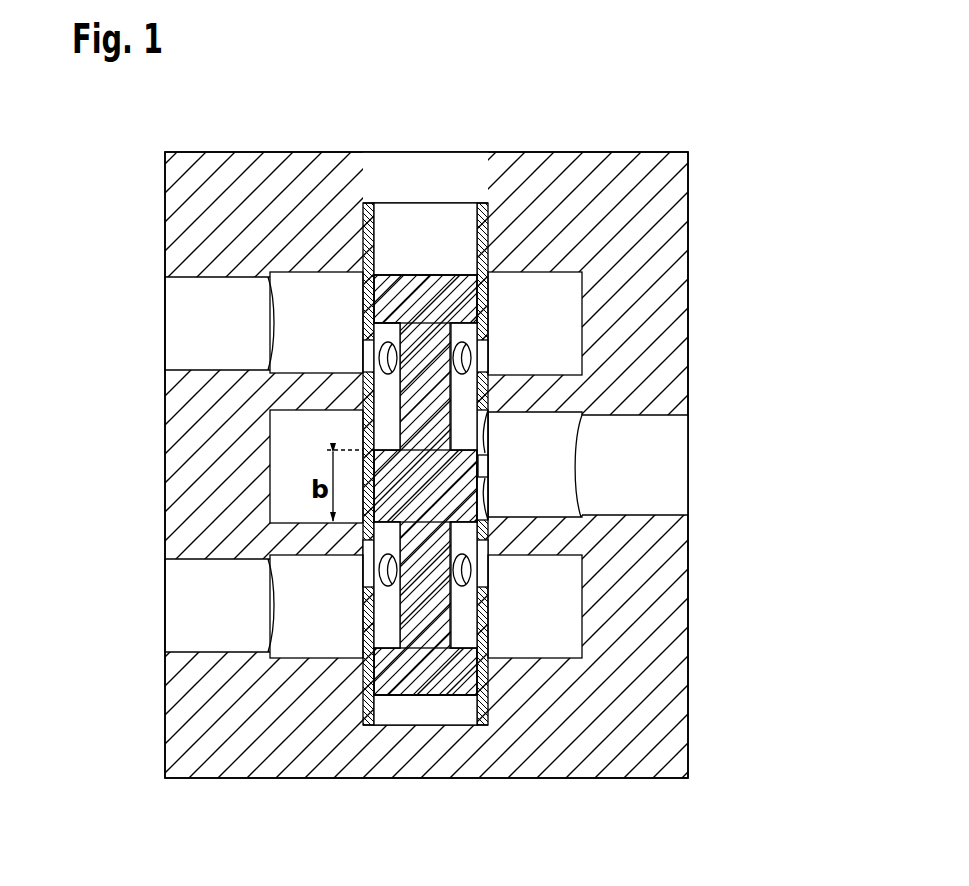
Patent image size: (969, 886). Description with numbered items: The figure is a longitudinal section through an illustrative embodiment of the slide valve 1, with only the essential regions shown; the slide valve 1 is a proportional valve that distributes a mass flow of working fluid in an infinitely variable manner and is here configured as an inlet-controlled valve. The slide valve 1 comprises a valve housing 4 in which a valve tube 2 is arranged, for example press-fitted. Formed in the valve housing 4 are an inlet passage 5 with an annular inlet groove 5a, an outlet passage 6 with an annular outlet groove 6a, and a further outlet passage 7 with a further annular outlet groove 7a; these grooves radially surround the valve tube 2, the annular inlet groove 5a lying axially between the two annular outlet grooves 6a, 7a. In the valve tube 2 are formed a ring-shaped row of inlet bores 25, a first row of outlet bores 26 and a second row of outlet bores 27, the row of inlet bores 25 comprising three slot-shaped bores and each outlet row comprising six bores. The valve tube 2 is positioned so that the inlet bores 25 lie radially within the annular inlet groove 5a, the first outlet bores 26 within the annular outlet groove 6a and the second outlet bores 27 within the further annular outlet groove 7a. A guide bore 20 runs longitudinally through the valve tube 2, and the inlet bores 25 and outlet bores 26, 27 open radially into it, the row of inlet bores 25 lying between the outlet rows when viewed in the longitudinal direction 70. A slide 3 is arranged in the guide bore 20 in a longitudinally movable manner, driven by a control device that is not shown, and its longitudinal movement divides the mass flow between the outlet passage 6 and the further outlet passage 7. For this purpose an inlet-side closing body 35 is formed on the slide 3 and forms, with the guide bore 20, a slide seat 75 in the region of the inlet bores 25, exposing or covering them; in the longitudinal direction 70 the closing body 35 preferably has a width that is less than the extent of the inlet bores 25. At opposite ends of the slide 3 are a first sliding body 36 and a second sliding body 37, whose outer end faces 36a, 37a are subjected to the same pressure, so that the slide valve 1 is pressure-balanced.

The slide valve 1 is at (783, 424).
The valve tube 2 is at (492, 232).
The slide 3 is at (448, 700).
The valve housing 4 is at (663, 700).
The inlet passage 5 is at (663, 470).
The annular inlet groove 5a is at (547, 438).
The outlet passage 6 is at (188, 340).
The annular outlet groove 6a is at (552, 313).
The further outlet passage 7 is at (188, 607).
The further annular outlet groove 7a is at (552, 608).
The guide bore 20 is at (453, 233).
The inlet bores 25 is at (492, 478).
The first outlet bores 26 is at (468, 356).
The second outlet bores 27 is at (468, 568).
The inlet-side closing body 35 is at (403, 523).
The first sliding body 36 is at (406, 303).
The outer end face of first sliding body 36a is at (411, 268).
The second sliding body 37 is at (408, 672).
The outer end face of second sliding body 37a is at (385, 710).
The longitudinal direction 70 is at (427, 737).
The slide seat 75 is at (400, 390).